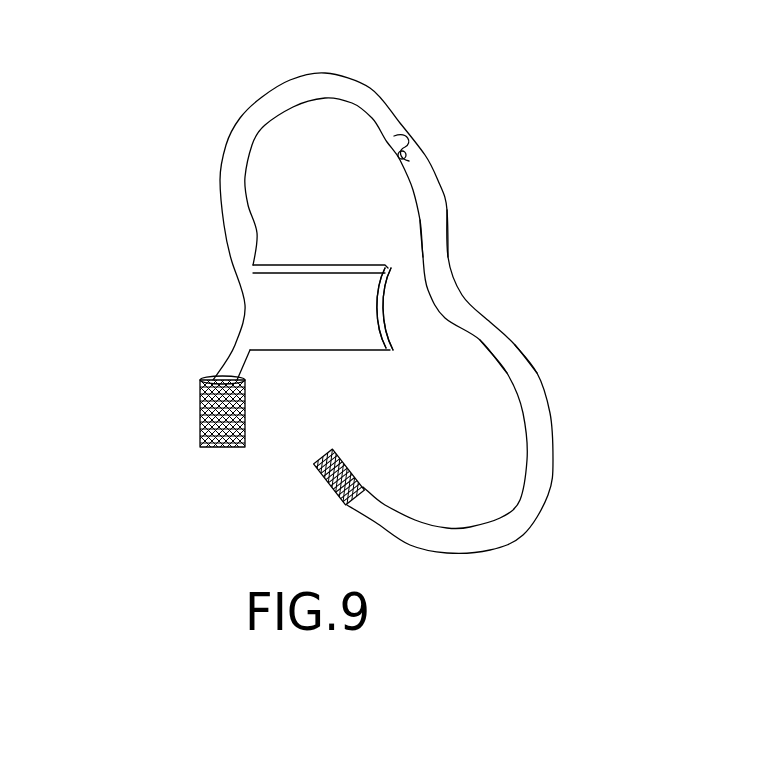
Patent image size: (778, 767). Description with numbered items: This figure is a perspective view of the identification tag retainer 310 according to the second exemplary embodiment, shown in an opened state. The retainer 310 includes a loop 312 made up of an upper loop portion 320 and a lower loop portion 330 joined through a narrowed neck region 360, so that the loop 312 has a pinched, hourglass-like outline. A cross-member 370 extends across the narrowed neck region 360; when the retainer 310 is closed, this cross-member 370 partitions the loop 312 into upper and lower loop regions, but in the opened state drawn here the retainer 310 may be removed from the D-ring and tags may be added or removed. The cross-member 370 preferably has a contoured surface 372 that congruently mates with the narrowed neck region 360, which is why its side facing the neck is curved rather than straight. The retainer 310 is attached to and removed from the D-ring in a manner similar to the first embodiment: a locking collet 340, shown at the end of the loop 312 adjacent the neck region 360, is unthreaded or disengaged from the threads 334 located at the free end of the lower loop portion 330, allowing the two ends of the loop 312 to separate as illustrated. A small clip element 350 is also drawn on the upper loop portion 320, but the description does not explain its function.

The identification tag retainer 310 is at (355, 315).
The loop 312 is at (452, 250).
The upper loop portion 320 is at (260, 97).
The lower loop portion 330 is at (523, 533).
The threads 334 is at (350, 462).
The locking collet 340 is at (200, 407).
The retaining clip 350 is at (418, 135).
The narrowed neck region 360 is at (242, 307).
The cross-member 370 is at (361, 292).
The contoured surface 372 is at (393, 343).